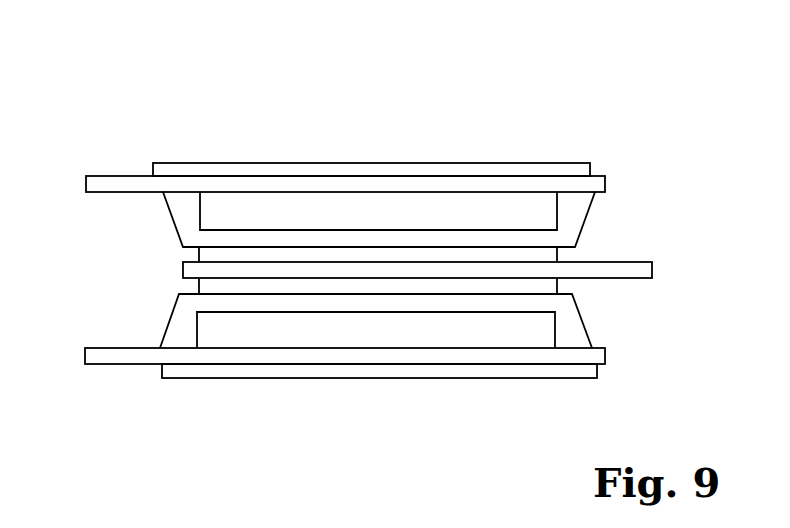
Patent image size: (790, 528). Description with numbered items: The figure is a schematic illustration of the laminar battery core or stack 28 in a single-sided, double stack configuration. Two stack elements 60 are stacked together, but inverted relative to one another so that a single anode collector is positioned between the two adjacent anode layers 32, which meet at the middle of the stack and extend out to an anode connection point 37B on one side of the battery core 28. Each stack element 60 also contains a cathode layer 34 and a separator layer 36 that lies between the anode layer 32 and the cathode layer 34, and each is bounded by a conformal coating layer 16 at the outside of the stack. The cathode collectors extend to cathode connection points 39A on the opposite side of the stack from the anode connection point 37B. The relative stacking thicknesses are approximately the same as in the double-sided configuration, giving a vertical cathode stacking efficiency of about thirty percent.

The battery core 28 is at (147, 72).
The conformal coating layer 16 is at (430, 170).
The cathode connection point 39A is at (105, 176).
The stack element 60 is at (97, 230).
The separator layer 36 is at (183, 335).
The cathode layer 34 is at (438, 220).
The anode layer 32 is at (278, 255).
The anode connection point 37B is at (635, 268).